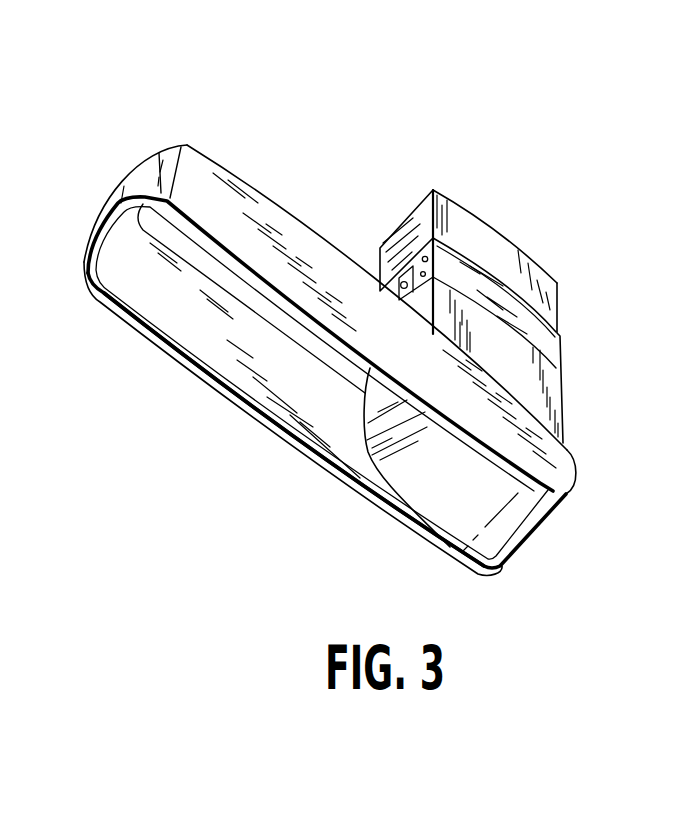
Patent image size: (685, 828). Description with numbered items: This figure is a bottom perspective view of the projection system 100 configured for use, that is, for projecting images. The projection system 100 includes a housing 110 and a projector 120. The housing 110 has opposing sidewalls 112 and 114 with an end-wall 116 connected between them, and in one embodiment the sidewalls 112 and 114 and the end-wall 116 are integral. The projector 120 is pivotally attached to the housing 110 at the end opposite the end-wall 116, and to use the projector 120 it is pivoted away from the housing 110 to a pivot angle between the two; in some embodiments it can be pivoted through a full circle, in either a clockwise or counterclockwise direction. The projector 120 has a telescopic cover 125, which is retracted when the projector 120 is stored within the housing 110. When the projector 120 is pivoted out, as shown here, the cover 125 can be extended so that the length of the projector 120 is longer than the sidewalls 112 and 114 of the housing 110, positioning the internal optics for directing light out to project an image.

The projection system 100 is at (505, 104).
The housing 110 is at (254, 163).
The sidewall 112 is at (300, 227).
The sidewall 114 is at (235, 395).
The end-wall 116 is at (107, 222).
The projector 120 is at (562, 269).
The telescopic cover 125 is at (485, 242).